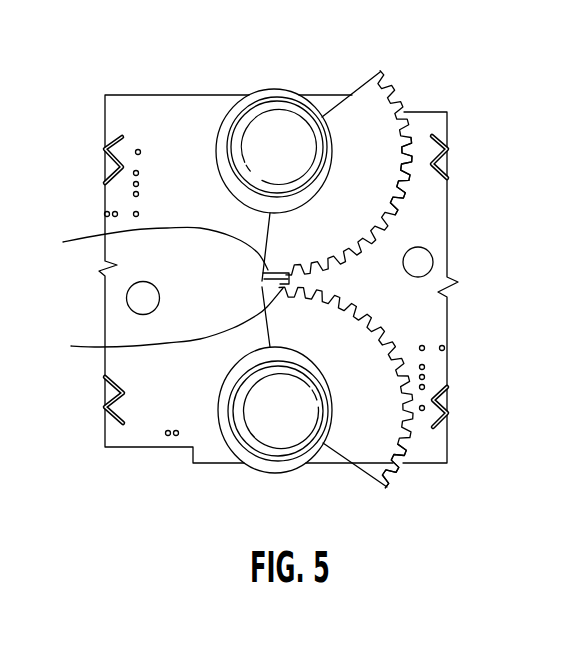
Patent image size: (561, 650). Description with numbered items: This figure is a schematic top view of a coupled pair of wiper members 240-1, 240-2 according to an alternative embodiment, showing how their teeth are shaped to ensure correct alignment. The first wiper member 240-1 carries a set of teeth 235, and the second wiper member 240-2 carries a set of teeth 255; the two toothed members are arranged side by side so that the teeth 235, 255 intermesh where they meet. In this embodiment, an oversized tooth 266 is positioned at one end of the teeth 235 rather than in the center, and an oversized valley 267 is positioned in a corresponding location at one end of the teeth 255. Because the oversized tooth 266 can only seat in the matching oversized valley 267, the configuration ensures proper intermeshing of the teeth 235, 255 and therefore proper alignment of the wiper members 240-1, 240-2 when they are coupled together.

The wiper member 240-2 is at (382, 127).
The teeth 255 is at (405, 189).
The oversized valley 267 is at (147, 248).
The oversized tooth 266 is at (159, 326).
The wiper member 240-1 is at (351, 446).
The teeth 235 is at (399, 467).